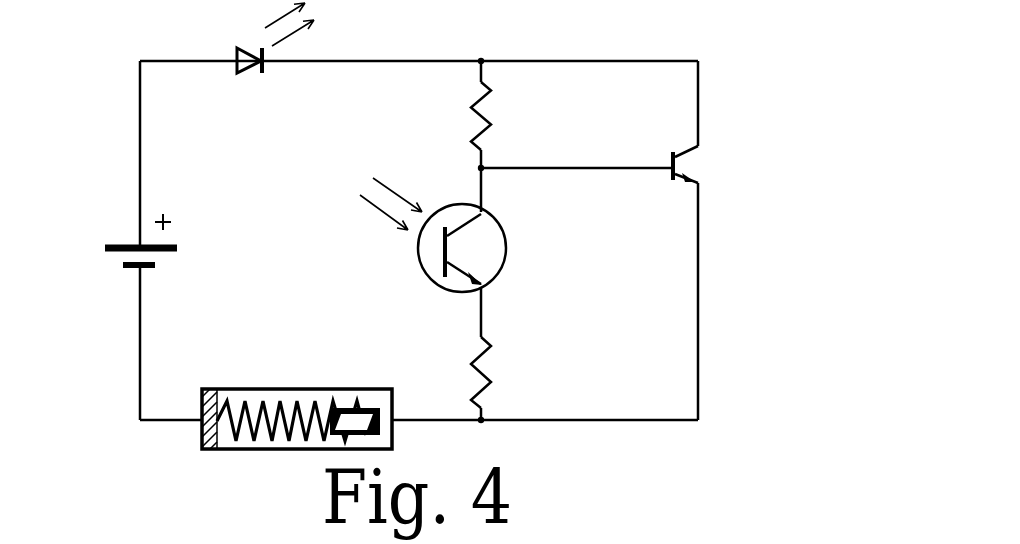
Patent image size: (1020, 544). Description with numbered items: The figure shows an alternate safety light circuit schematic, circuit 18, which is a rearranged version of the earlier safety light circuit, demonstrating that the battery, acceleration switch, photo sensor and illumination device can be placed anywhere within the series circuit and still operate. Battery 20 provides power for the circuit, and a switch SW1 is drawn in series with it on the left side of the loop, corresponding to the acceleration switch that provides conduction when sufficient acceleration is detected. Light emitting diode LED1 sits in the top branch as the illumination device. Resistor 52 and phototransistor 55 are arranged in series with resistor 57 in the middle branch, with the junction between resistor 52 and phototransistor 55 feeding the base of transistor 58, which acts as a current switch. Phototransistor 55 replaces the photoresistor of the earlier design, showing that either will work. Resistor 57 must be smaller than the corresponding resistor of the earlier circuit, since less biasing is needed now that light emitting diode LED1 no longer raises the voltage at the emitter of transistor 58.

The circuit 18 is at (717, 100).
The battery 20 is at (118, 244).
The resistor 52 is at (489, 108).
The phototransistor 55 is at (506, 249).
The resistor 57 is at (489, 360).
The transistor 58 is at (672, 164).
The light emitting diode LED1 is at (245, 74).
The switch SW1 is at (272, 385).